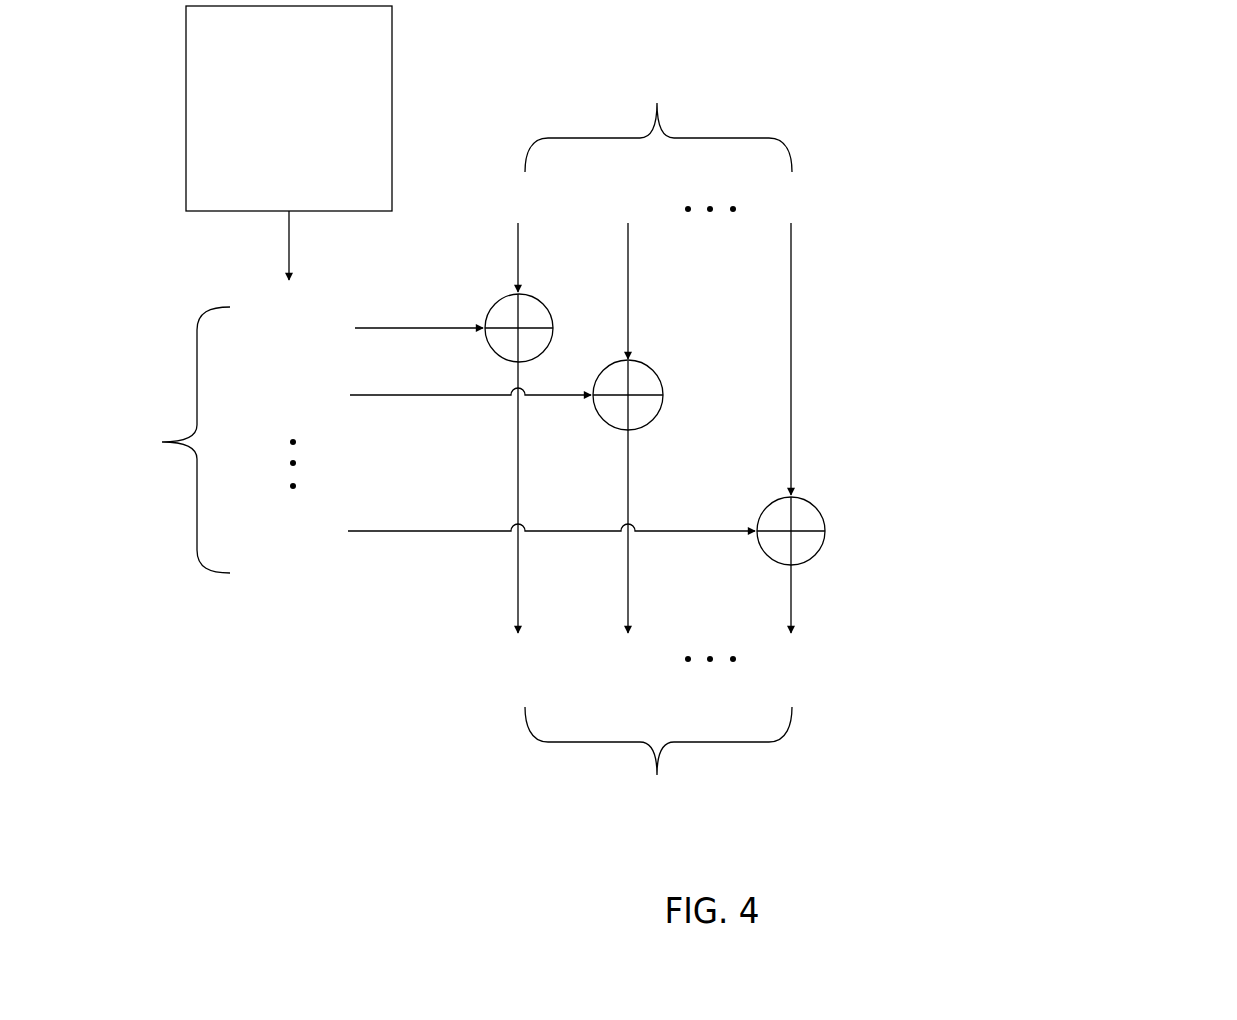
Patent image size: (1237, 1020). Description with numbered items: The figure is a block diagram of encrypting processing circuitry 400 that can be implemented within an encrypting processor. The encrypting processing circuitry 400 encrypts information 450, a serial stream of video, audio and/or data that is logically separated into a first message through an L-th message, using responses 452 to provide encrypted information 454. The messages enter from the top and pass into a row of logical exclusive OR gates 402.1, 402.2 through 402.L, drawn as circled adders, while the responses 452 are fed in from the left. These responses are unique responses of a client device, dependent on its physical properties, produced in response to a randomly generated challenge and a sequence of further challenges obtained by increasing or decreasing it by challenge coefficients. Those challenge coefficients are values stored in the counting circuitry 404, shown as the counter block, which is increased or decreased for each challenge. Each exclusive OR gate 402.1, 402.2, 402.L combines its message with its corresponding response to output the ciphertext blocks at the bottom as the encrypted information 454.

The encrypting processing circuitry 400 is at (1198, 116).
The counting circuitry 404 is at (392, 60).
The information 450 is at (654, 146).
The responses 452 is at (229, 440).
The encrypted information 454 is at (655, 736).
The logical exclusive OR gate 402.1 is at (493, 306).
The logical exclusive OR gate 402.2 is at (661, 381).
The logical exclusive OR gate 402.L is at (818, 508).